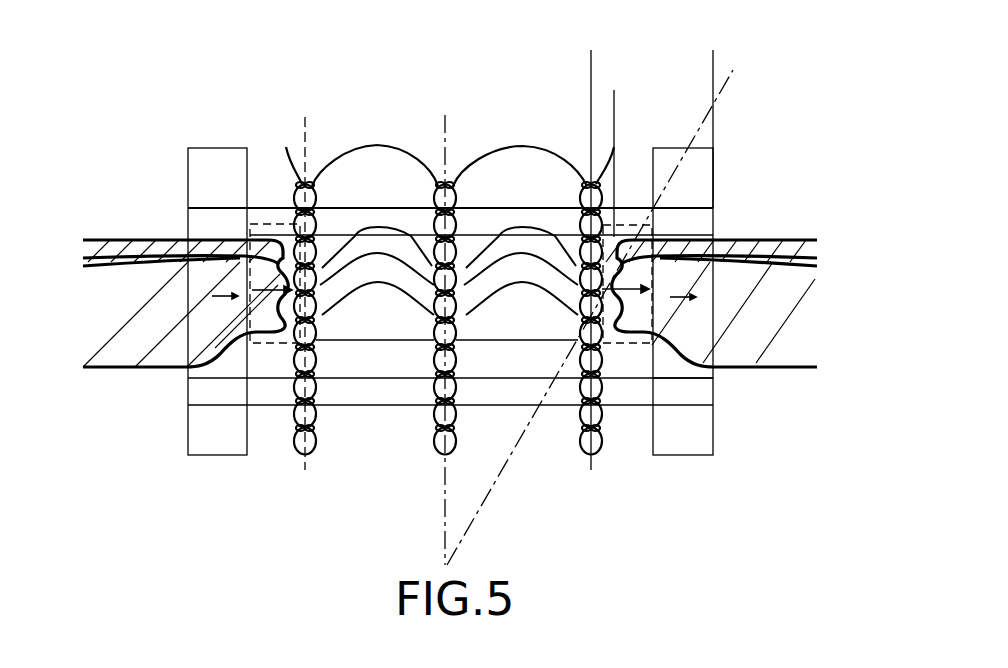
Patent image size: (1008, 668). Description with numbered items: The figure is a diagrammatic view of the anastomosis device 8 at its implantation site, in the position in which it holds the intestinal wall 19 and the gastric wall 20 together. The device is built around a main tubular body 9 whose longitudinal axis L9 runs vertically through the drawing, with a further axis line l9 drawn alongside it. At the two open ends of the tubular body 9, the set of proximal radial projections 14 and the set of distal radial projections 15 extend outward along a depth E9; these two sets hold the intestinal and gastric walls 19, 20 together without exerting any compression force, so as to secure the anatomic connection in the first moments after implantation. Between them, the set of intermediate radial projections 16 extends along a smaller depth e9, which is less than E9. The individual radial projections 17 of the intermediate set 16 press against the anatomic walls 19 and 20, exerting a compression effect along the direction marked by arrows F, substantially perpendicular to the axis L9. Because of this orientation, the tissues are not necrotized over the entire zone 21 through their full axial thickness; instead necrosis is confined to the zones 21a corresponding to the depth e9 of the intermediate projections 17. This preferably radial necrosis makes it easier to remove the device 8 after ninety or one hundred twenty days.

The anastomosis device 8 is at (517, 138).
The main tubular body 9 is at (542, 147).
The set of proximal radial projections 14 is at (627, 206).
The set of distal radial projections 15 is at (706, 400).
The set of intermediate radial projections 16 is at (397, 252).
The radial projections 17 is at (709, 206).
The intestinal wall 19 is at (144, 252).
The gastric wall 20 is at (134, 352).
The zone 21 is at (215, 457).
The necrosis zones 21a is at (270, 345).
The compression direction F is at (454, 304).
The depth of proximal and distal radial projections E9 is at (591, 57).
The depth of intermediate radial projections e9 is at (578, 98).
The longitudinal axis L9 is at (447, 137).
The side line l9 is at (306, 137).